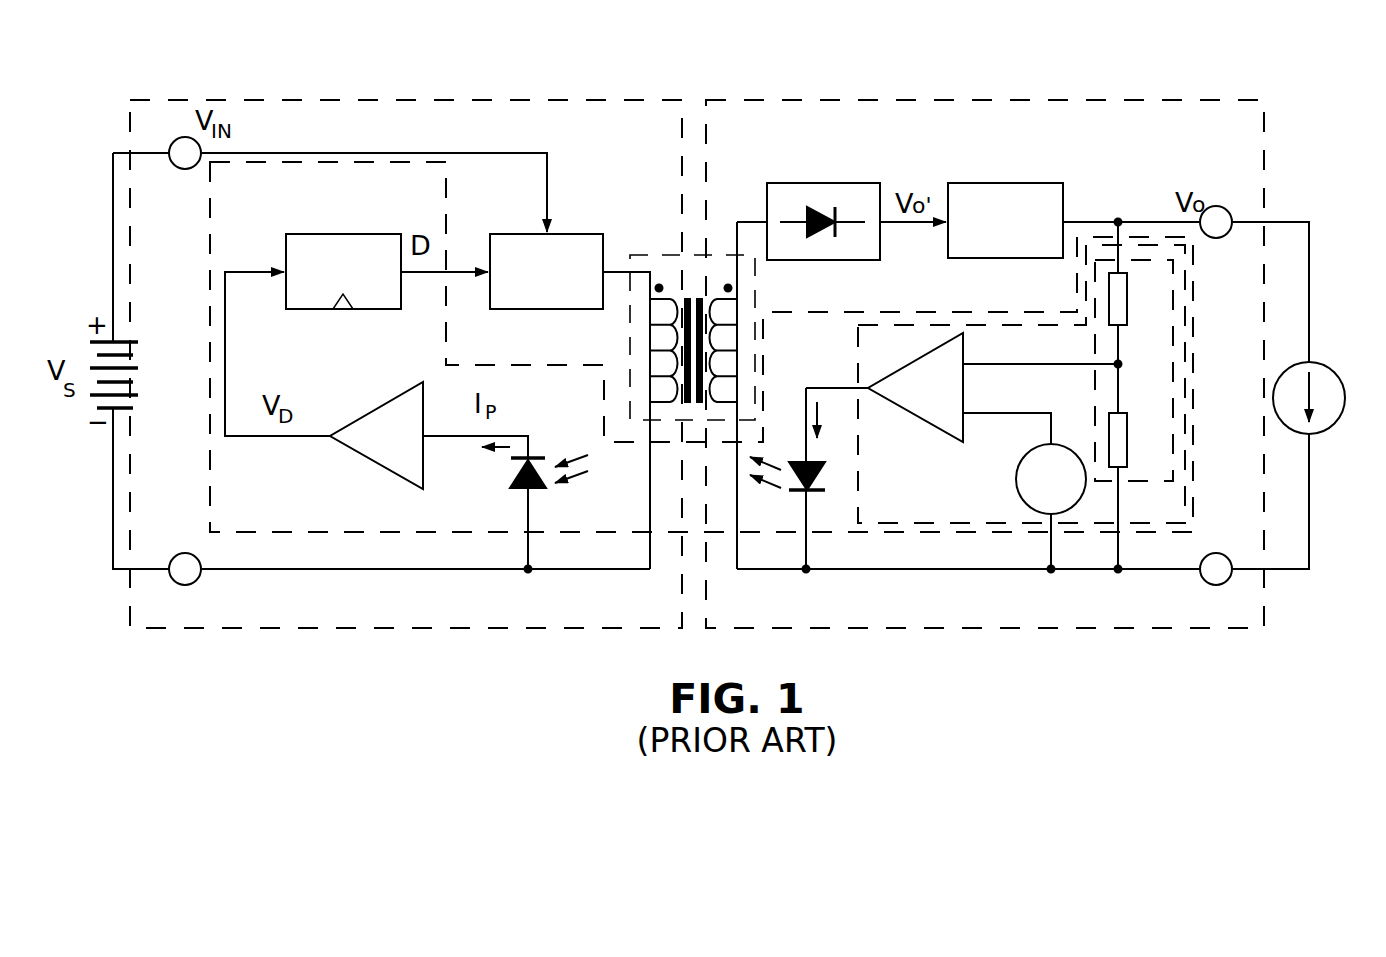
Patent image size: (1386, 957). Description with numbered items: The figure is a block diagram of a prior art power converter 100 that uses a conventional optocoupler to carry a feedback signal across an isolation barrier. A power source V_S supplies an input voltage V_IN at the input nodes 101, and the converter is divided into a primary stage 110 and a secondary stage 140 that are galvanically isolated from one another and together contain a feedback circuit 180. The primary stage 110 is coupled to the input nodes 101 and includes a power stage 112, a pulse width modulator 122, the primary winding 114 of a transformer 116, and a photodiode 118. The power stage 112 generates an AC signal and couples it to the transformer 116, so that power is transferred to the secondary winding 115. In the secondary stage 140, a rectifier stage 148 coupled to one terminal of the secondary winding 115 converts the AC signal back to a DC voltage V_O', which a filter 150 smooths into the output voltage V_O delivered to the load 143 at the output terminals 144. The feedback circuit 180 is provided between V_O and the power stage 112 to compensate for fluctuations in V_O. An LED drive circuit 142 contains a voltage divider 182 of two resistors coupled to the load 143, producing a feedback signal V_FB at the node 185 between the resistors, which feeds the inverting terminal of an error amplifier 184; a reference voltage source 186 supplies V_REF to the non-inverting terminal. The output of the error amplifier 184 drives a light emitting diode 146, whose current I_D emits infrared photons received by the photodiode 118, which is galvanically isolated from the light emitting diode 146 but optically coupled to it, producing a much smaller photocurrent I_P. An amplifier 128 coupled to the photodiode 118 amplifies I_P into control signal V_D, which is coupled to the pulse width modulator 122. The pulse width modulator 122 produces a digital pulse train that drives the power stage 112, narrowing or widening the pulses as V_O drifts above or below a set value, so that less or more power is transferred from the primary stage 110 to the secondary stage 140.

The power converter 100 is at (444, 76).
The input nodes 101 is at (187, 137).
The primary stage 110 is at (528, 100).
The power stage 112 is at (580, 234).
The primary winding 114 is at (652, 323).
The secondary winding 115 is at (737, 324).
The transformer 116 is at (687, 253).
The photodiode 118 is at (522, 505).
The pulse width modulator 122 is at (350, 234).
The amplifier 128 is at (378, 405).
The secondary stage 140 is at (1054, 100).
The LED drive circuit 142 is at (900, 325).
The load 143 is at (1337, 372).
The output terminals 144 is at (1207, 208).
The light emitting diode 146 is at (805, 493).
The rectifier stage 148 is at (825, 183).
The filter 150 is at (1013, 183).
The feedback circuit 180 is at (331, 540).
The voltage divider 182 is at (1173, 303).
The error amplifier 184 is at (922, 422).
The node 185 is at (1122, 370).
The reference voltage source 186 is at (1073, 505).